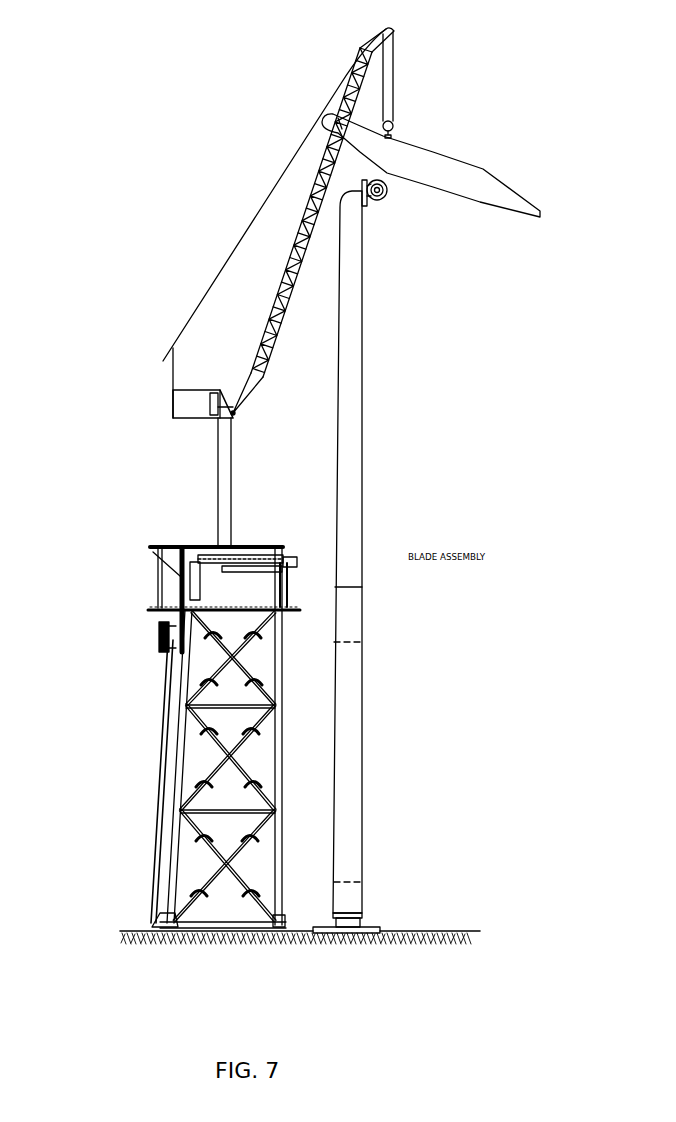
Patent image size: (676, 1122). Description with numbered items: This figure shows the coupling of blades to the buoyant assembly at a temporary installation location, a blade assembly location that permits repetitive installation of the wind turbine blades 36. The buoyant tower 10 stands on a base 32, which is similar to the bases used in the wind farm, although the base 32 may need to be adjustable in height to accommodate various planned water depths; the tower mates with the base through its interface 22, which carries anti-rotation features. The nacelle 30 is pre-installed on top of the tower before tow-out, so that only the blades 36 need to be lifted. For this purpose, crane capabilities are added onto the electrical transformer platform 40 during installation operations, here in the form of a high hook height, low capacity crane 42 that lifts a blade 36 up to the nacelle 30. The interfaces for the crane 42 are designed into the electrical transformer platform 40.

The buoyant tower 10 is at (362, 718).
The interface 22 is at (365, 908).
The nacelle 30 is at (383, 202).
The base 32 is at (368, 928).
The wind turbine blades 36 is at (477, 177).
The electrical transformer platform 40 is at (158, 647).
The crane 42 is at (168, 410).